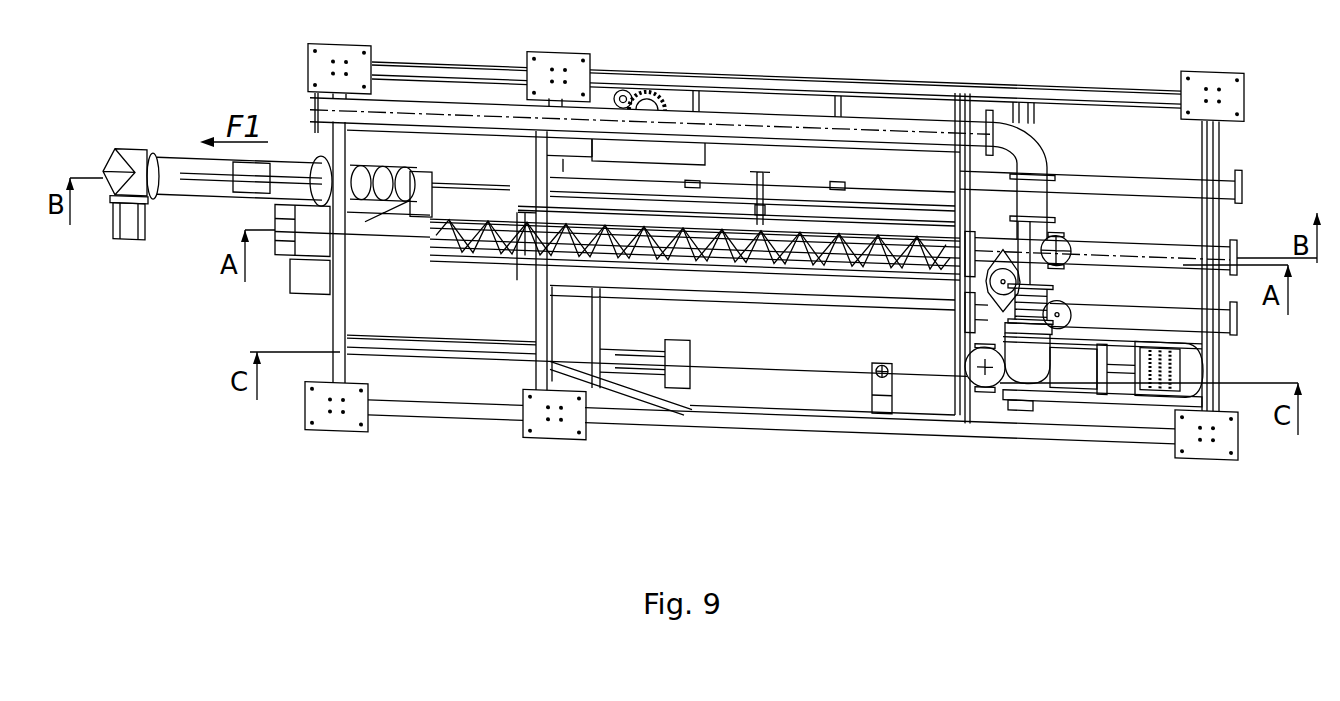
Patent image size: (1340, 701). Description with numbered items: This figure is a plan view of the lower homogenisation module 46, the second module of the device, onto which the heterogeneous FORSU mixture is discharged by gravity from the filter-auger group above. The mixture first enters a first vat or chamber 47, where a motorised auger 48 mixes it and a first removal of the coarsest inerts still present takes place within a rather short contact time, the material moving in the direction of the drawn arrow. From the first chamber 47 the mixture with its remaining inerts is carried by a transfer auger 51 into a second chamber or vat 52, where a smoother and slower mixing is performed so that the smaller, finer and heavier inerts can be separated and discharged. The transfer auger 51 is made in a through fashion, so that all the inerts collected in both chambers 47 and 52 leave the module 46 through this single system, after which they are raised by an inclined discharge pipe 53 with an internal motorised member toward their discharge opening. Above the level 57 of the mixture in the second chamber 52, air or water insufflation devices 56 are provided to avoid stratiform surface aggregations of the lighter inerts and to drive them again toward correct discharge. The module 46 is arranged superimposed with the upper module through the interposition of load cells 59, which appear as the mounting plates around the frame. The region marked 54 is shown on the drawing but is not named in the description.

The lower homogenisation module 46 is at (673, 251).
The first vat or chamber 47 is at (400, 304).
The motorised auger 48 is at (408, 172).
The transfer auger 51 is at (492, 255).
The second chamber or vat 52 is at (803, 208).
The inclined discharge pipe 53 is at (210, 190).
The collecting tank 54 is at (792, 354).
The air or water insufflation devices 56 is at (833, 217).
The level of the mixture 57 is at (614, 204).
The load cells 59 is at (1207, 450).